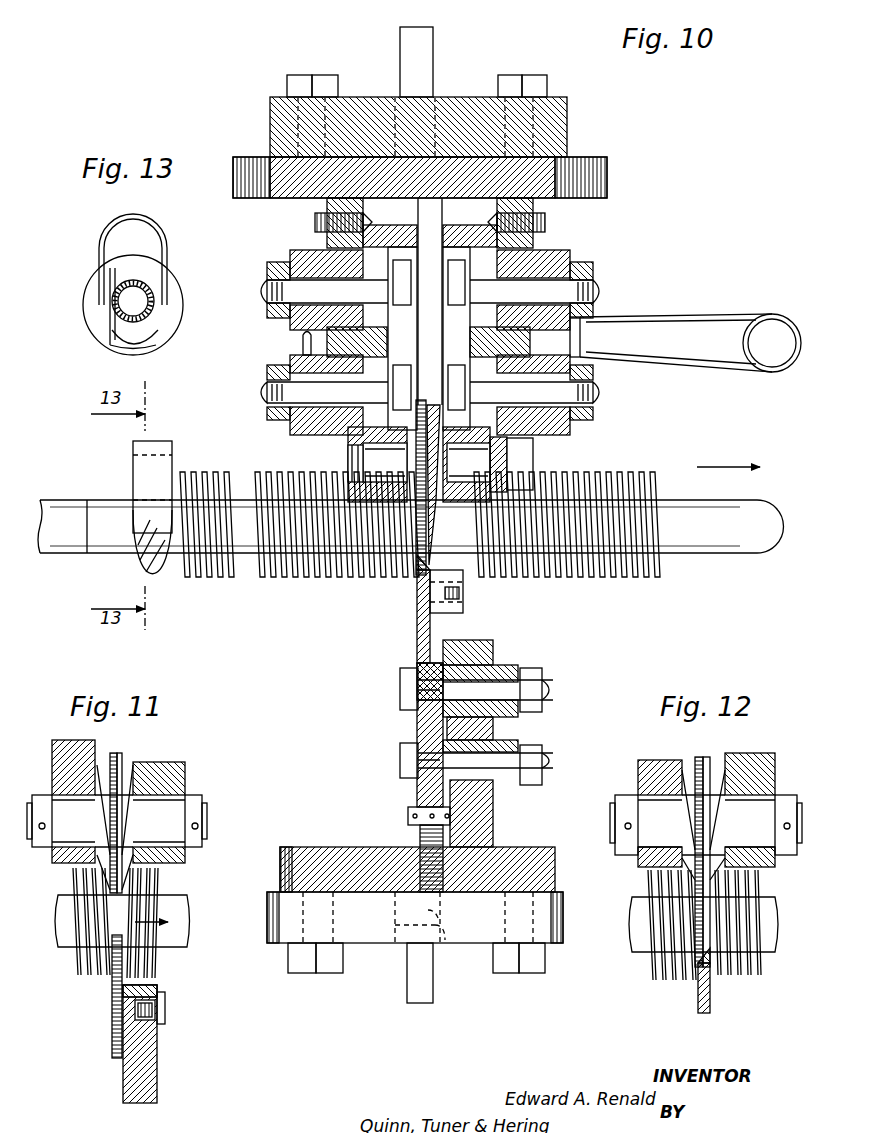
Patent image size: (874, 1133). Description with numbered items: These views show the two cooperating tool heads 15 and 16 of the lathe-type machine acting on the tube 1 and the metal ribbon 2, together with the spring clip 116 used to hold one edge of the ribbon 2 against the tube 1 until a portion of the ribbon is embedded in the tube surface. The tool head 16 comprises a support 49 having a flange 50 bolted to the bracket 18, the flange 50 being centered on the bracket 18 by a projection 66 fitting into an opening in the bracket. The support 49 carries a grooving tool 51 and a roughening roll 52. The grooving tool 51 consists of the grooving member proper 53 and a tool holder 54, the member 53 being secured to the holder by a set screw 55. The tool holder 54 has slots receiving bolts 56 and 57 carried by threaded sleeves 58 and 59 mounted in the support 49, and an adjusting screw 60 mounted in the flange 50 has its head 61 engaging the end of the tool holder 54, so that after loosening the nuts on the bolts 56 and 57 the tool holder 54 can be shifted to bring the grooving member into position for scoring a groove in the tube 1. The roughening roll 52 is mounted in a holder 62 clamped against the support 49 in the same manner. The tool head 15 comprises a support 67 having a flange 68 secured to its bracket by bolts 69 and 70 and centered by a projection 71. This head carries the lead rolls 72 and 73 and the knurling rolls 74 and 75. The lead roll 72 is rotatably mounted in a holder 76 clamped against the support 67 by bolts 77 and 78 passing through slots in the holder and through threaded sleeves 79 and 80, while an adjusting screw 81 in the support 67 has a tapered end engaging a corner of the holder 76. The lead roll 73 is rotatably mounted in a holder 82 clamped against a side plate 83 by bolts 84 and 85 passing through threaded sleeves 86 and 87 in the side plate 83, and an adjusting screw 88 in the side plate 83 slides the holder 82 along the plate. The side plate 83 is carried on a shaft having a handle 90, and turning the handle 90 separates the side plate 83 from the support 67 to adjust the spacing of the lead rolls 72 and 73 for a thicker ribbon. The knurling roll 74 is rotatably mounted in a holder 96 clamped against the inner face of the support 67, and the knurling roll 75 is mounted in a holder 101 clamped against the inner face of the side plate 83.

In FIG. 10, the tube 1 is at (700, 556).
In FIG. 13, the tube 1 is at (136, 280).
In FIG. 11, the tube 1 is at (181, 902).
In FIG. 12, the tube 1 is at (640, 942).
In FIG. 10, the ribbon 2 is at (172, 572).
In FIG. 13, the ribbon 2 is at (108, 337).
In FIG. 11, the ribbon 2 is at (74, 975).
In FIG. 12, the ribbon 2 is at (655, 976).
In FIG. 10, the tool head 15 is at (578, 206).
In FIG. 10, the tool head 16 is at (394, 718).
In FIG. 10, the bracket 18 is at (366, 935).
In FIG. 10, the support 49 is at (493, 828).
In FIG. 10, the flange 50 is at (345, 847).
In FIG. 10, the grooving tool 51 is at (415, 645).
In FIG. 12, the grooving tool 51 is at (698, 1005).
In FIG. 11, the roughening roll 52 is at (112, 1037).
In FIG. 10, the grooving member 53 is at (418, 588).
In FIG. 12, the grooving member 53 is at (712, 972).
In FIG. 10, the tool holder 54 is at (416, 666).
In FIG. 10, the set screw 55 is at (463, 592).
In FIG. 10, the bolt 56 is at (545, 690).
In FIG. 10, the bolt 57 is at (550, 762).
In FIG. 10, the threaded sleeve 58 is at (518, 670).
In FIG. 10, the threaded sleeve 59 is at (518, 744).
In FIG. 10, the adjusting screw 60 is at (420, 835).
In FIG. 10, the head 61 is at (408, 812).
In FIG. 11, the holder 62 is at (157, 1068).
In FIG. 10, the projection 66 is at (445, 935).
In FIG. 10, the support 67 is at (330, 240).
In FIG. 10, the flange 68 is at (556, 175).
In FIG. 10, the bolt 69 is at (535, 75).
In FIG. 10, the bolt 70 is at (313, 75).
In FIG. 10, the projection 71 is at (428, 92).
In FIG. 10, the lead roll 72 is at (426, 400).
In FIG. 11, the lead roll 72 is at (113, 753).
In FIG. 10, the lead roll 73 is at (426, 405).
In FIG. 11, the lead roll 73 is at (121, 753).
In FIG. 12, the knurling roll 74 is at (695, 772).
In FIG. 12, the knurling roll 75 is at (708, 757).
In FIG. 10, the holder 76 is at (424, 246).
In FIG. 11, the holder 76 is at (70, 760).
In FIG. 10, the bolt 77 is at (258, 291).
In FIG. 10, the bolt 78 is at (258, 395).
In FIG. 10, the threaded sleeve 79 is at (290, 256).
In FIG. 10, the threaded sleeve 80 is at (290, 360).
In FIG. 10, the adjusting screw 81 is at (315, 222).
In FIG. 10, the holder 82 is at (429, 338).
In FIG. 11, the holder 82 is at (180, 784).
In FIG. 10, the side plate 83 is at (545, 226).
In FIG. 10, the bolt 84 is at (604, 288).
In FIG. 10, the bolt 85 is at (604, 394).
In FIG. 10, the threaded sleeve 86 is at (572, 258).
In FIG. 10, the threaded sleeve 87 is at (568, 434).
In FIG. 10, the adjusting screw 88 is at (533, 228).
In FIG. 10, the handle 90 is at (772, 314).
In FIG. 12, the holder 96 is at (648, 776).
In FIG. 12, the holder 101 is at (763, 756).
In FIG. 10, the spring clip 116 is at (172, 462).
In FIG. 13, the spring clip 116 is at (166, 234).